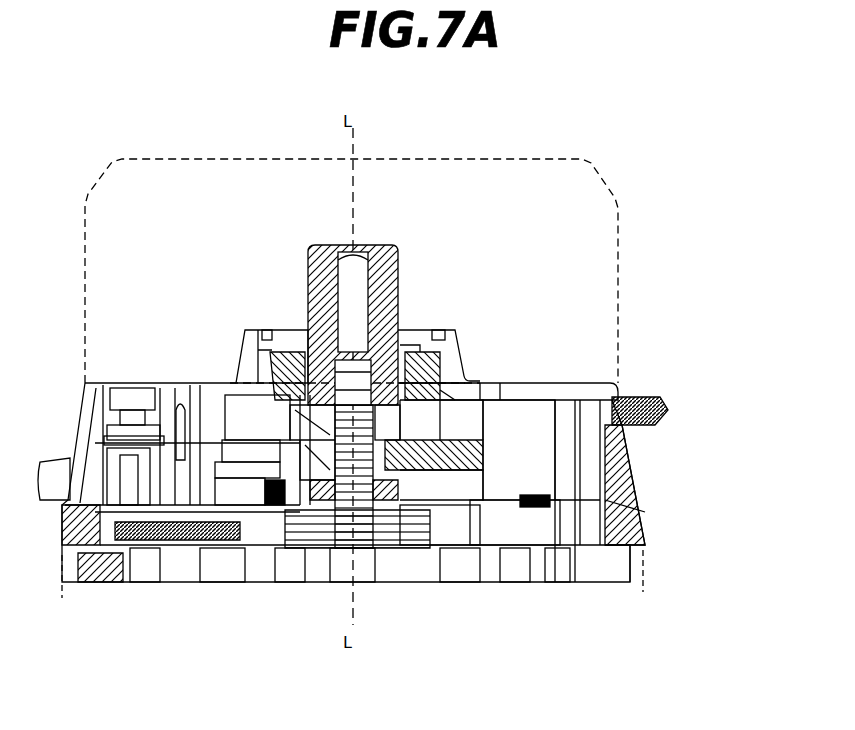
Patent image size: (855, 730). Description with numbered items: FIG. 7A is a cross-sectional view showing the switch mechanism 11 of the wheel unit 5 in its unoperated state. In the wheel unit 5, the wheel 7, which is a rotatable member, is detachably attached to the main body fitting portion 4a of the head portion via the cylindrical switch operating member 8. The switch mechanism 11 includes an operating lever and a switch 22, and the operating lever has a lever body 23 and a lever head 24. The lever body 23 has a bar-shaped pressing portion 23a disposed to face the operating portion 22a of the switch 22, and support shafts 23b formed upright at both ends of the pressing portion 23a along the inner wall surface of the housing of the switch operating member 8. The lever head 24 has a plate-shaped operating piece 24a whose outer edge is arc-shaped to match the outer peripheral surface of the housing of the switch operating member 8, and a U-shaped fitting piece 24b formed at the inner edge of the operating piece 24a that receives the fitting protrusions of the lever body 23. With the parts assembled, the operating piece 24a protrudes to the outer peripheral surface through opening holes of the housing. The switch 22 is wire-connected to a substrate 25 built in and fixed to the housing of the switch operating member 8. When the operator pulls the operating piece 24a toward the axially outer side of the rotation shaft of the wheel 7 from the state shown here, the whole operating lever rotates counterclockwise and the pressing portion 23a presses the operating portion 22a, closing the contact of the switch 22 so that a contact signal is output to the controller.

The wheel unit 5 is at (438, 282).
The wheel 7 is at (618, 272).
The switch operating member 8 is at (608, 383).
The switch mechanism 11 is at (545, 425).
The switch 22 is at (520, 583).
The operating portion 22a is at (565, 583).
The lever body 23 is at (618, 468).
The pressing portion 23a is at (645, 548).
The support shaft 23b is at (640, 510).
The lever head 24 is at (587, 406).
The operating piece 24a is at (660, 412).
The fitting piece 24b is at (612, 393).
The substrate 25 is at (492, 583).
The main body fitting portion 4a is at (645, 590).